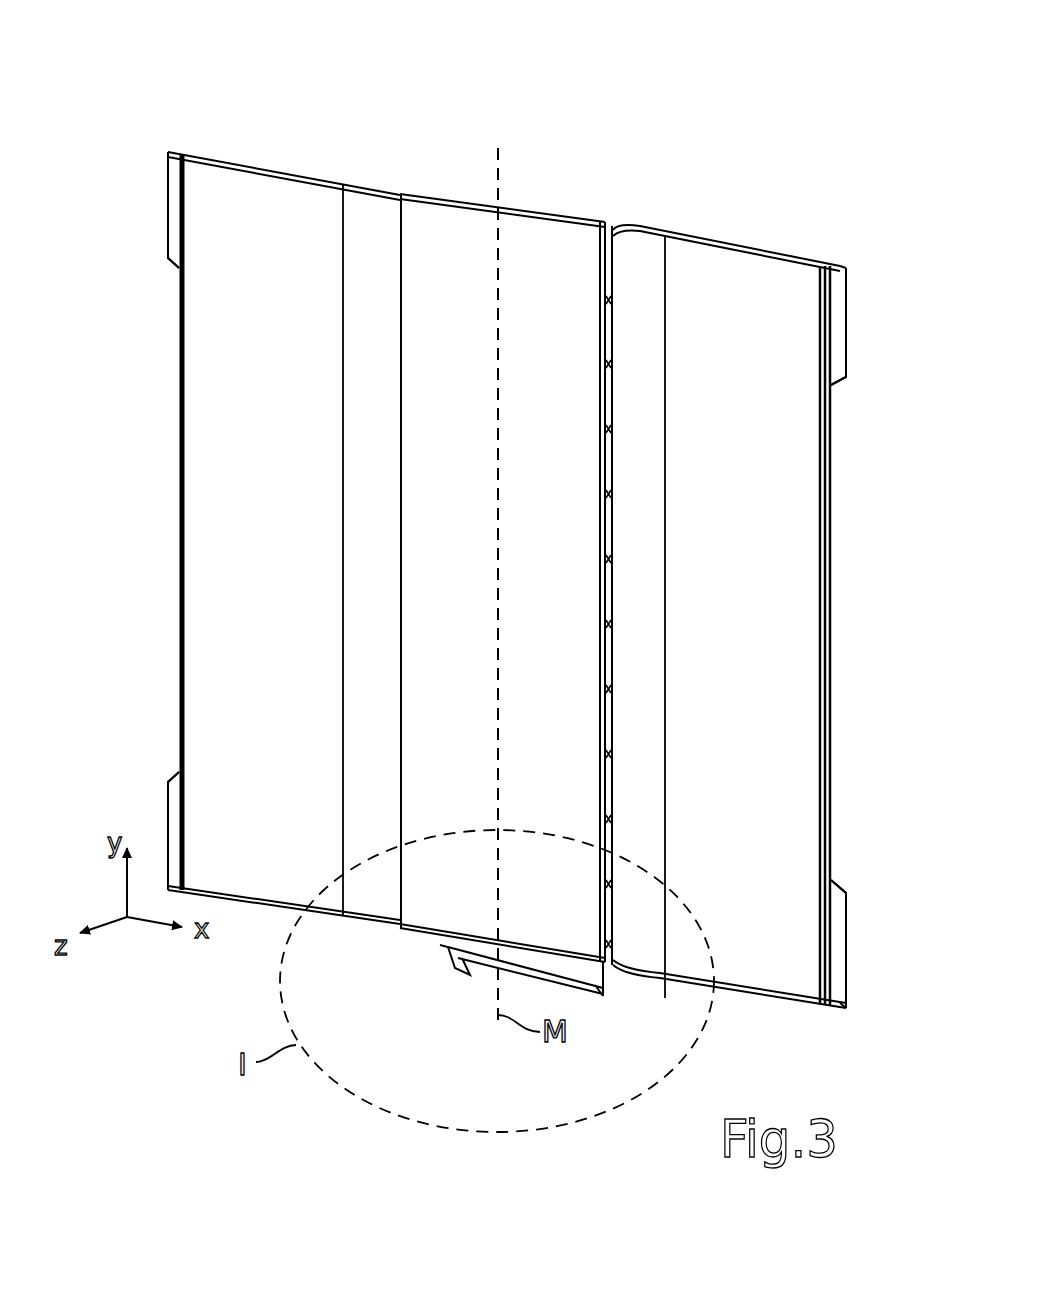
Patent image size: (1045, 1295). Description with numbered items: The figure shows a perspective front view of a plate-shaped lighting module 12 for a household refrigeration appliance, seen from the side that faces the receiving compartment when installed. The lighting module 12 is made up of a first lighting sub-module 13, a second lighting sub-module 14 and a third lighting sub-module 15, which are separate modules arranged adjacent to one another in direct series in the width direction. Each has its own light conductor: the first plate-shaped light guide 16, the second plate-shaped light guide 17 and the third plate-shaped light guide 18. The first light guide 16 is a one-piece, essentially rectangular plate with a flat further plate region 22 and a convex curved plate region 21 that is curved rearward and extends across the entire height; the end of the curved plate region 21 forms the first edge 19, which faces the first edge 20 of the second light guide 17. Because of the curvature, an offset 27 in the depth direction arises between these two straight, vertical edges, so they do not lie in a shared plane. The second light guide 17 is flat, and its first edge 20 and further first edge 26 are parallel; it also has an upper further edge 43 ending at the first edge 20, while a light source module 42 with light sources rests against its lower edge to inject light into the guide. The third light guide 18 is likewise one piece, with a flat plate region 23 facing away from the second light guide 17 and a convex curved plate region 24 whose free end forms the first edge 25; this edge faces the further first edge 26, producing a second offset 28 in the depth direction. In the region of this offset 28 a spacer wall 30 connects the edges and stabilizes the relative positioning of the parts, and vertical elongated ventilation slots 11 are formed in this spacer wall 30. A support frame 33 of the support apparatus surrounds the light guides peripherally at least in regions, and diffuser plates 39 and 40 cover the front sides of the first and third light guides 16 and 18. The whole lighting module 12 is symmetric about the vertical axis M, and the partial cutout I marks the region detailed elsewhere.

The ventilation slots 11 is at (612, 372).
The lighting module 12 is at (521, 146).
The first lighting sub-module 13 is at (305, 155).
The second lighting sub-module 14 is at (548, 237).
The third lighting sub-module 15 is at (727, 213).
The first plate-shaped light guide 16 is at (270, 213).
The second plate-shaped light guide 17 is at (480, 263).
The third plate-shaped light guide 18 is at (770, 310).
The first edge 19 is at (428, 196).
The first edge 20 is at (405, 232).
The curved plate region 21 is at (368, 215).
The flat further plate region 22 is at (207, 350).
The flat plate region 23 is at (790, 577).
The curved plate region 24 is at (650, 232).
The first edge 25 is at (614, 226).
The further first edge 26 is at (600, 272).
The offset 27 is at (394, 940).
The offset 28 is at (616, 987).
The spacer wall 30 is at (612, 302).
The support frame 33 is at (180, 444).
The diffuser plate 39 is at (213, 606).
The diffuser plate 40 is at (805, 758).
The light source module 42 is at (433, 948).
The further edge 43 is at (520, 208).